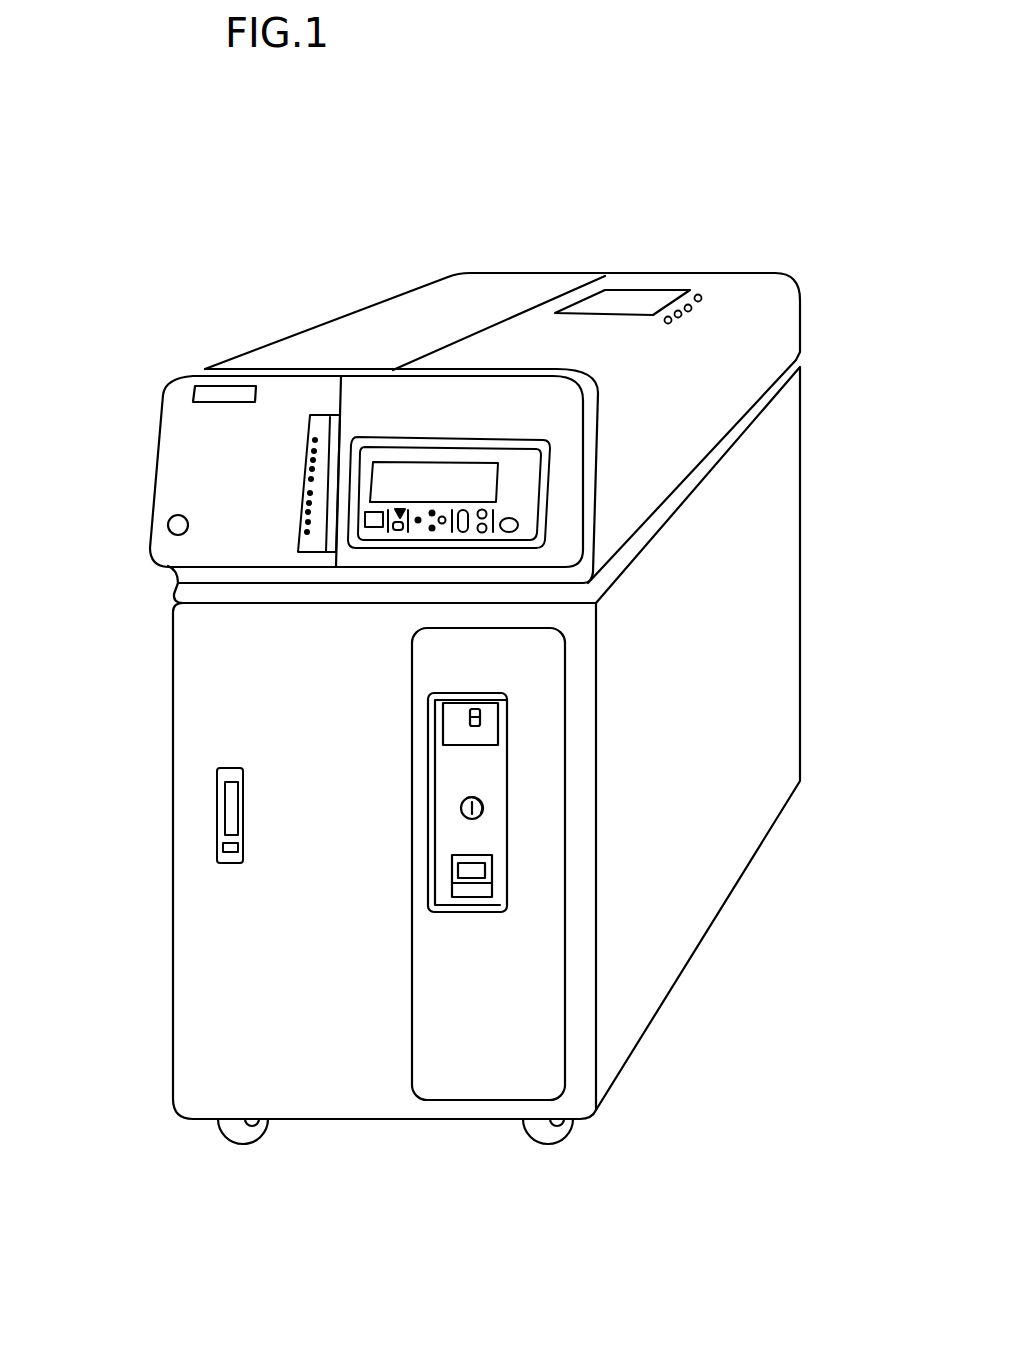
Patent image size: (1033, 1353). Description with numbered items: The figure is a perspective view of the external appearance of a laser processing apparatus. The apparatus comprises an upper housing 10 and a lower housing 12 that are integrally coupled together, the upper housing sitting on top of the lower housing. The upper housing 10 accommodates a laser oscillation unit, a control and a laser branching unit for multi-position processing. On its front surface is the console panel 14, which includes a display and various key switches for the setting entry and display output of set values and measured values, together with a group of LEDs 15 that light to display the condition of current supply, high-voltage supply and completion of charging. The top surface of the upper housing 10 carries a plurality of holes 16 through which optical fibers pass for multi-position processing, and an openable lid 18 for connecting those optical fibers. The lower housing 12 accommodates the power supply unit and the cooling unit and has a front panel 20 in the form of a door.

The upper housing 10 is at (442, 288).
The lower housing 12 is at (715, 830).
The console panel 14 is at (385, 440).
The group of LEDs 15 is at (305, 462).
The holes 16 is at (703, 310).
The openable lid 18 is at (630, 304).
The front panel 20 is at (193, 727).